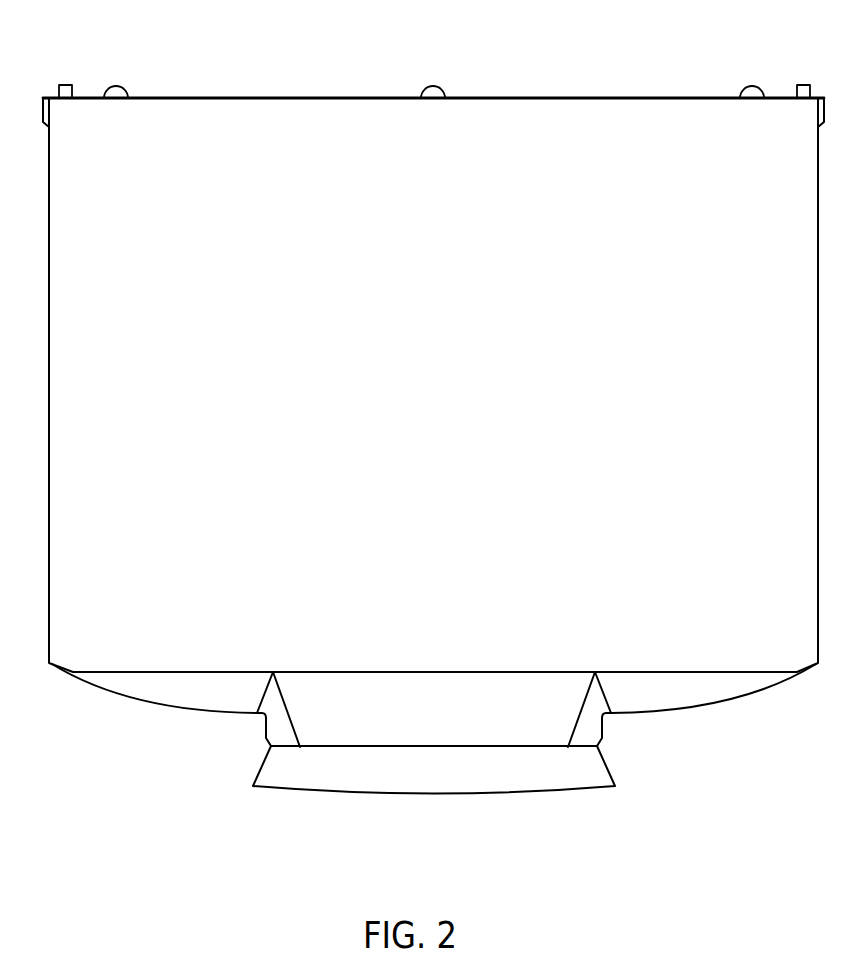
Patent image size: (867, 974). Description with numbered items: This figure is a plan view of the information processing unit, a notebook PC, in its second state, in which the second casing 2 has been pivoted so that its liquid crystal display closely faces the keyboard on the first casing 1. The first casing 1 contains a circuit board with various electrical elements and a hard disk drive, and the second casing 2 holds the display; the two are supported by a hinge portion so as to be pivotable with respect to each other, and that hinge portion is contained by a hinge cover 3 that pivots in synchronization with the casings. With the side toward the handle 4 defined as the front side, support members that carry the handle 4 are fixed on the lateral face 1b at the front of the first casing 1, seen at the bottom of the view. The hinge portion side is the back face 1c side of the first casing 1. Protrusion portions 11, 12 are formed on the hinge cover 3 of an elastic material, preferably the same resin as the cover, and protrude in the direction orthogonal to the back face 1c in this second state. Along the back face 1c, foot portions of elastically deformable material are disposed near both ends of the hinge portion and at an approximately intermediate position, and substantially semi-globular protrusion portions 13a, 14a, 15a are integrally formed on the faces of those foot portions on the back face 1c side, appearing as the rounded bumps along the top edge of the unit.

The first casing 1 is at (716, 710).
The lateral face 1b is at (360, 672).
The back face 1c is at (244, 97).
The second casing 2 is at (562, 173).
The hinge cover 3 is at (44, 112).
The handle 4 is at (445, 780).
The protrusion portion 11 is at (63, 85).
The protrusion portion 12 is at (803, 85).
The protrusion portion 13a is at (115, 86).
The protrusion portion 14a is at (433, 86).
The protrusion portion 15a is at (752, 86).